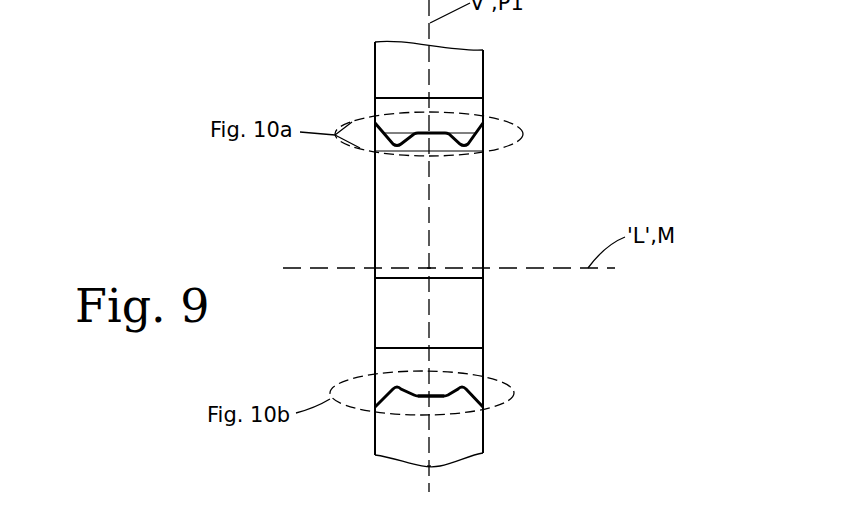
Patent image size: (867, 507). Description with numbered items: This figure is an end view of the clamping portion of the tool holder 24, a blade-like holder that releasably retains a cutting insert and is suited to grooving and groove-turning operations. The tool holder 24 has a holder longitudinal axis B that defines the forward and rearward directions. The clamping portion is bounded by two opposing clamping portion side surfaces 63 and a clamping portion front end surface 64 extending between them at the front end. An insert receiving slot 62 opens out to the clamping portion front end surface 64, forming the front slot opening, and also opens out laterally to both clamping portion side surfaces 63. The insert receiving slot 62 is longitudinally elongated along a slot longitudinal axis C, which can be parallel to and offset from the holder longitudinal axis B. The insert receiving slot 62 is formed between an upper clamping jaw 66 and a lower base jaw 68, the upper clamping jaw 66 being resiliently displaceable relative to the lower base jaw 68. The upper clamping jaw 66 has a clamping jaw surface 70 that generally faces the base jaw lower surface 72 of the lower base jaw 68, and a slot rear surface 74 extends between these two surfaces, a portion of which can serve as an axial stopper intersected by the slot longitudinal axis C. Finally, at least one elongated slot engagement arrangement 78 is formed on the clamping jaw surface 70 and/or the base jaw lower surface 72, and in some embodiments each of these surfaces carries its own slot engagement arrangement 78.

The tool holder 24 is at (270, 52).
The insert receiving slot 62 is at (415, 214).
The clamping portion side surfaces 63 is at (375, 68).
The clamping portion front end surface 64 is at (402, 408).
The upper clamping jaw 66 is at (460, 123).
The lower base jaw 68 is at (457, 430).
The clamping jaw surface 70 is at (418, 135).
The base jaw lower surface 72 is at (417, 397).
The slot rear surface 74 is at (473, 322).
The slot engagement arrangement 78 is at (448, 163).
The slot longitudinal axis C is at (428, 267).
The holder longitudinal axis B is at (432, 443).